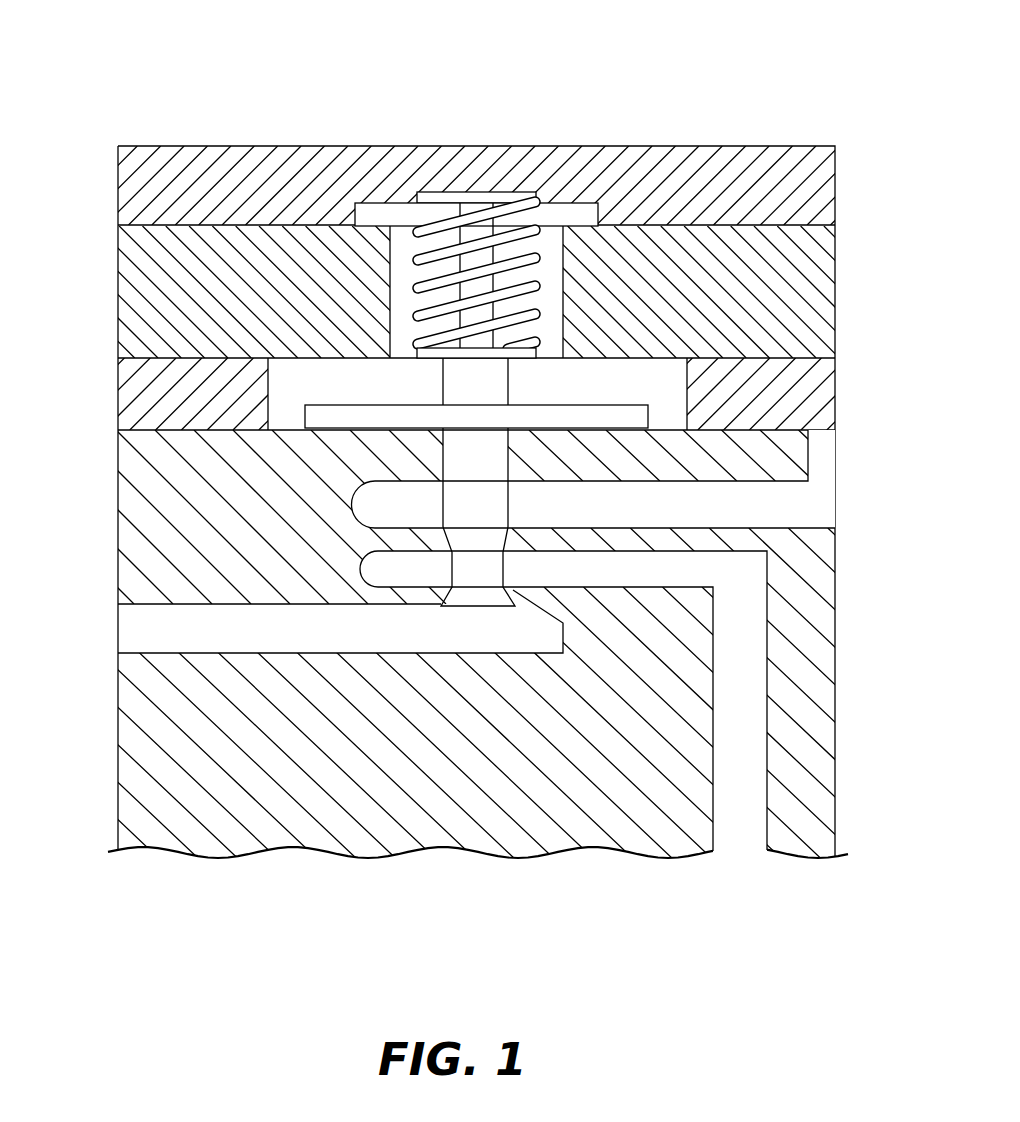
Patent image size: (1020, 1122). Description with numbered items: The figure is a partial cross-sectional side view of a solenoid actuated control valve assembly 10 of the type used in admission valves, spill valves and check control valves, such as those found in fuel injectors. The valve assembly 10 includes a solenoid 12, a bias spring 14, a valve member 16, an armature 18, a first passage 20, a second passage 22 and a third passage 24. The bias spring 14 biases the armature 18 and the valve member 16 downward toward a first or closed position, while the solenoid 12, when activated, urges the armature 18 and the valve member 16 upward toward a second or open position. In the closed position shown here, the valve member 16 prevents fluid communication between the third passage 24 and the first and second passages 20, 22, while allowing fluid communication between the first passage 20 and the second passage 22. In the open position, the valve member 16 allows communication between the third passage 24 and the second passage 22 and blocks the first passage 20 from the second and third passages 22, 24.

The solenoid actuated control valve assembly 10 is at (774, 93).
The solenoid 12 is at (818, 280).
The bias spring 14 is at (418, 228).
The valve member 16 is at (452, 608).
The armature 18 is at (455, 418).
The first passage 20 is at (118, 626).
The second passage 22 is at (750, 737).
The third passage 24 is at (835, 503).